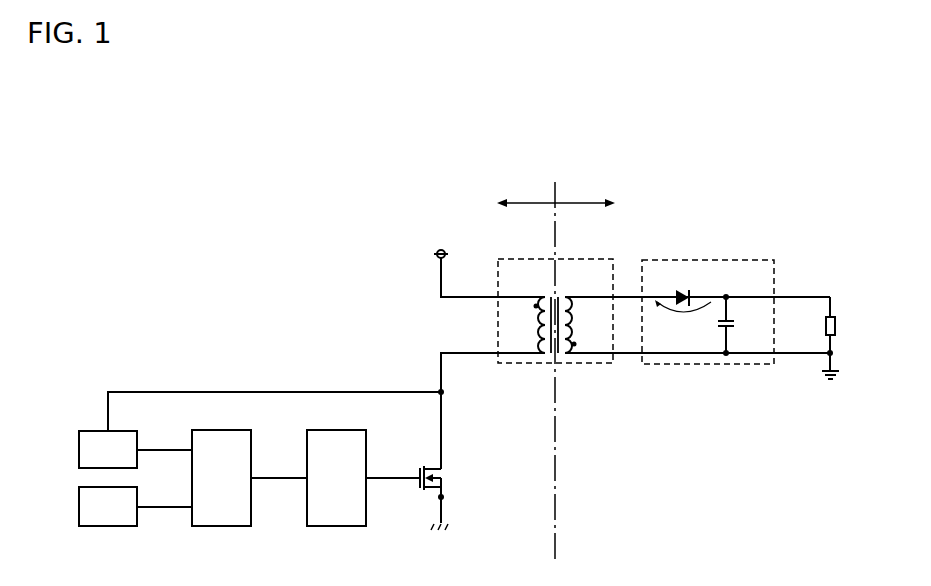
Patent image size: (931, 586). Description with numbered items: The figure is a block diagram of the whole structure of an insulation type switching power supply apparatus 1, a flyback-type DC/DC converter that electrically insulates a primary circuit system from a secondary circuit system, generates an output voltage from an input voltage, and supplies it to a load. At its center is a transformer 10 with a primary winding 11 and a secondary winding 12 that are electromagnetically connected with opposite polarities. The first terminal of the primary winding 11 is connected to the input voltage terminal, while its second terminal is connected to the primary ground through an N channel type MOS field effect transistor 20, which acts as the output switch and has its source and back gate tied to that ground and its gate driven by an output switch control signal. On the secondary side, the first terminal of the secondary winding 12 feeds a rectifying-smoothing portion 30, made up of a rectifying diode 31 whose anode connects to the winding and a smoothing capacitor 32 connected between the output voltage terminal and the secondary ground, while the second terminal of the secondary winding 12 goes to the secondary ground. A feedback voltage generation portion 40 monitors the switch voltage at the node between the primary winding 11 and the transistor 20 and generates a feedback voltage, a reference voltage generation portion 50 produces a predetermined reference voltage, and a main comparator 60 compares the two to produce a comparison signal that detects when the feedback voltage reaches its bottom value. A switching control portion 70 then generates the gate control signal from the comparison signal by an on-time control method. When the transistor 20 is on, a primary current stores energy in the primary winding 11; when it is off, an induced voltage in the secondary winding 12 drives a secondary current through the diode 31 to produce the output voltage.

The insulation type switching power supply apparatus 1 is at (107, 267).
The transformer 10 is at (587, 259).
The primary winding 11 is at (535, 294).
The secondary winding 12 is at (576, 294).
The N channel type MOS field effect transistor 20 is at (455, 509).
The rectifying-smoothing portion 30 is at (708, 260).
The rectifying diode 31 is at (685, 290).
The smoothing capacitor 32 is at (744, 325).
The feedback voltage generation portion 40 is at (80, 450).
The reference voltage generation portion 50 is at (80, 507).
The main comparator 60 is at (223, 430).
The switching control portion 70 is at (336, 430).